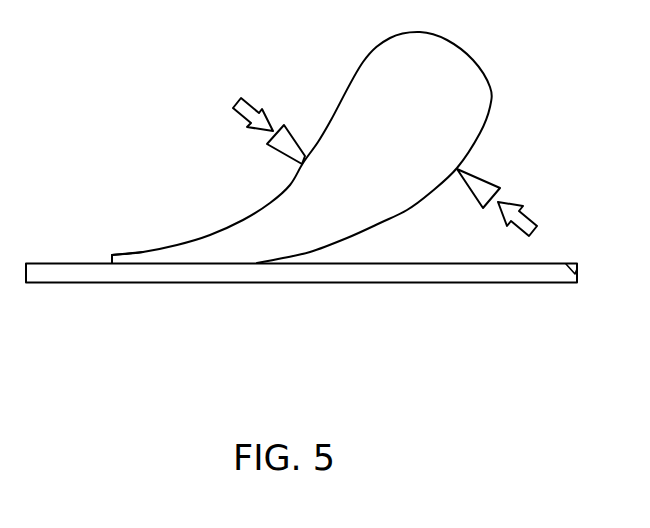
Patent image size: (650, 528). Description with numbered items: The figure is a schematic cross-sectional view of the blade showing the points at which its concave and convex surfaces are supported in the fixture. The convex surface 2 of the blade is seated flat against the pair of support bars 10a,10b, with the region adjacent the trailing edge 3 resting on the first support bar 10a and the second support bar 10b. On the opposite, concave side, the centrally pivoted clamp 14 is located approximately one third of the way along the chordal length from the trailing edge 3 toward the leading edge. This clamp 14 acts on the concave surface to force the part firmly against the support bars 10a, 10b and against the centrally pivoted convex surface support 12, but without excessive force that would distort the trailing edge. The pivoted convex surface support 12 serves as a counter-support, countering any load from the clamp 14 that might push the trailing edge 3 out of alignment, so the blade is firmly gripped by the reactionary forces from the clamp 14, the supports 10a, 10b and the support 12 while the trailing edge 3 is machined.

The convex surface 2 is at (407, 210).
The trailing edge 3 is at (126, 254).
The support bars 10a,10b is at (301, 321).
The support bar 10a is at (301, 273).
The support bar 10b is at (148, 285).
The pivoted convex surface support 12 is at (483, 170).
The pivoted clamp 14 is at (292, 124).